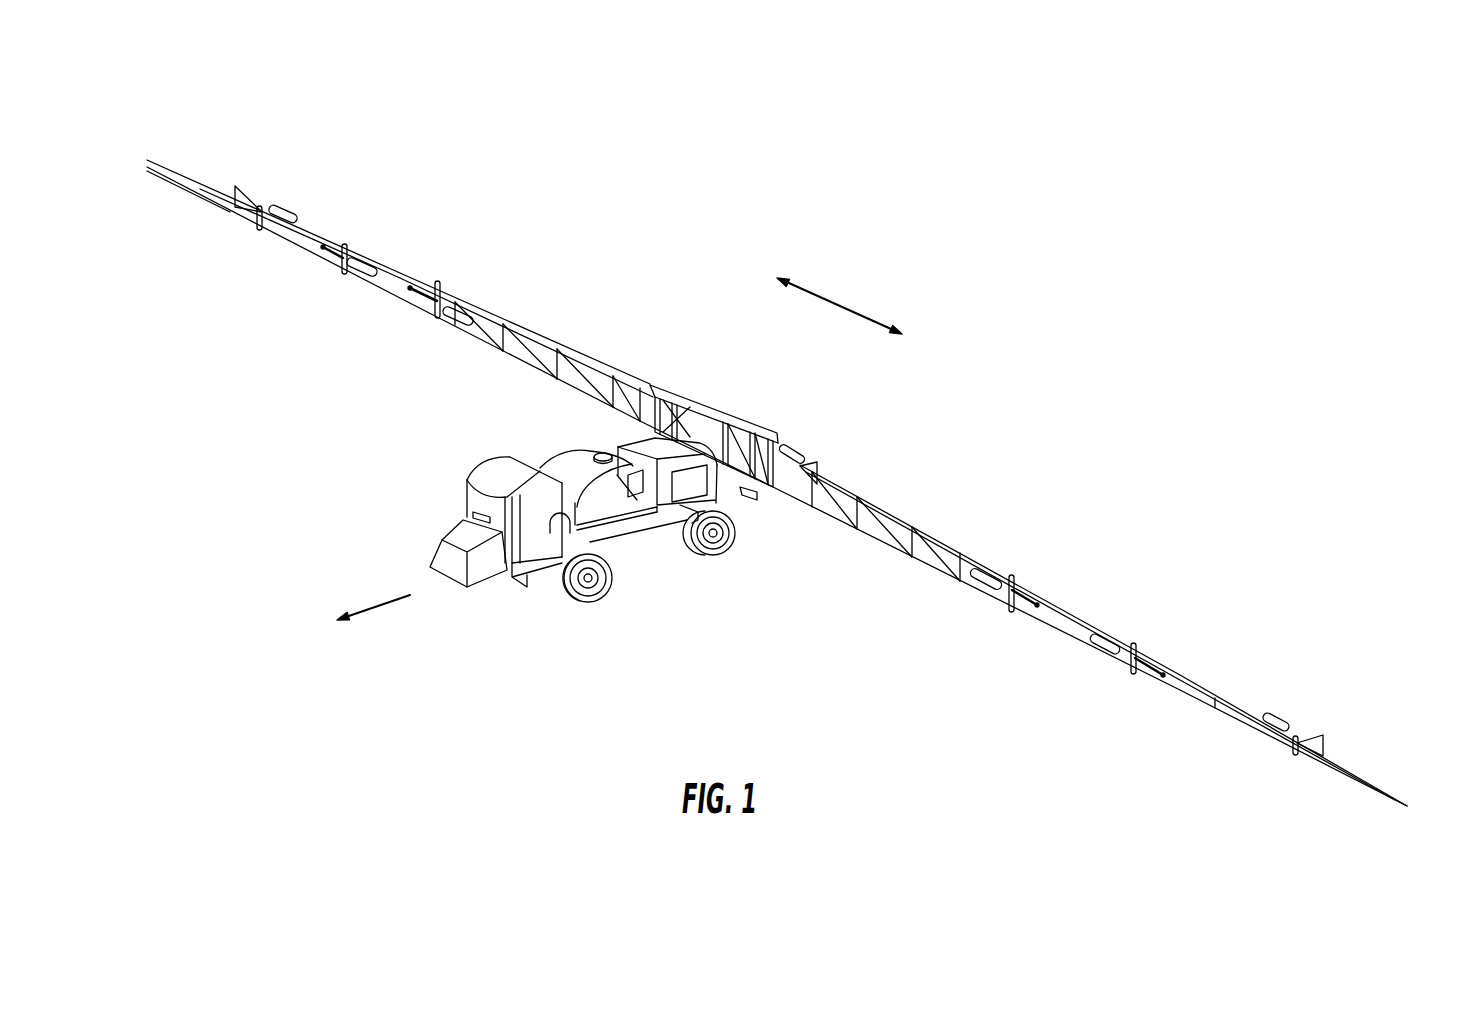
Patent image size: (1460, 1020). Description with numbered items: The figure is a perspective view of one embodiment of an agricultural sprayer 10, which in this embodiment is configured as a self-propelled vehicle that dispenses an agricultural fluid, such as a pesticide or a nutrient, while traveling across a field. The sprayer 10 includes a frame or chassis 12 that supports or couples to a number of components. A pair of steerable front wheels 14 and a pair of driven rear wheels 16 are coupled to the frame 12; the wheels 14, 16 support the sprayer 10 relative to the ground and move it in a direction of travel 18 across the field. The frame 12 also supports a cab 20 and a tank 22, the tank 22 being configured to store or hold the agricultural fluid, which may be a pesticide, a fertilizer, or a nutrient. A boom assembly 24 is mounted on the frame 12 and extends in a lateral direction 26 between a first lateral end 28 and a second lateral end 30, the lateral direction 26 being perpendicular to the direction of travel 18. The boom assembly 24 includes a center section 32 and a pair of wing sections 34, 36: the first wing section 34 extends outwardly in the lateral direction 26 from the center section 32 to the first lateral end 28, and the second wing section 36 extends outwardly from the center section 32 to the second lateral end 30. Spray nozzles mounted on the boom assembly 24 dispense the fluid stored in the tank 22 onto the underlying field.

The agricultural sprayer 10 is at (210, 138).
The frame or chassis 12 is at (623, 548).
The front wheels 14 is at (582, 603).
The rear wheels 16 is at (715, 558).
The direction of travel 18 is at (372, 608).
The cab 20 is at (497, 473).
The tank 22 is at (582, 460).
The boom assembly 24 is at (829, 435).
The lateral direction 26 is at (830, 301).
The first lateral end 28 is at (1410, 775).
The second lateral end 30 is at (131, 151).
The center section 32 is at (717, 407).
The first wing section 34 is at (1123, 638).
The second wing section 36 is at (323, 243).